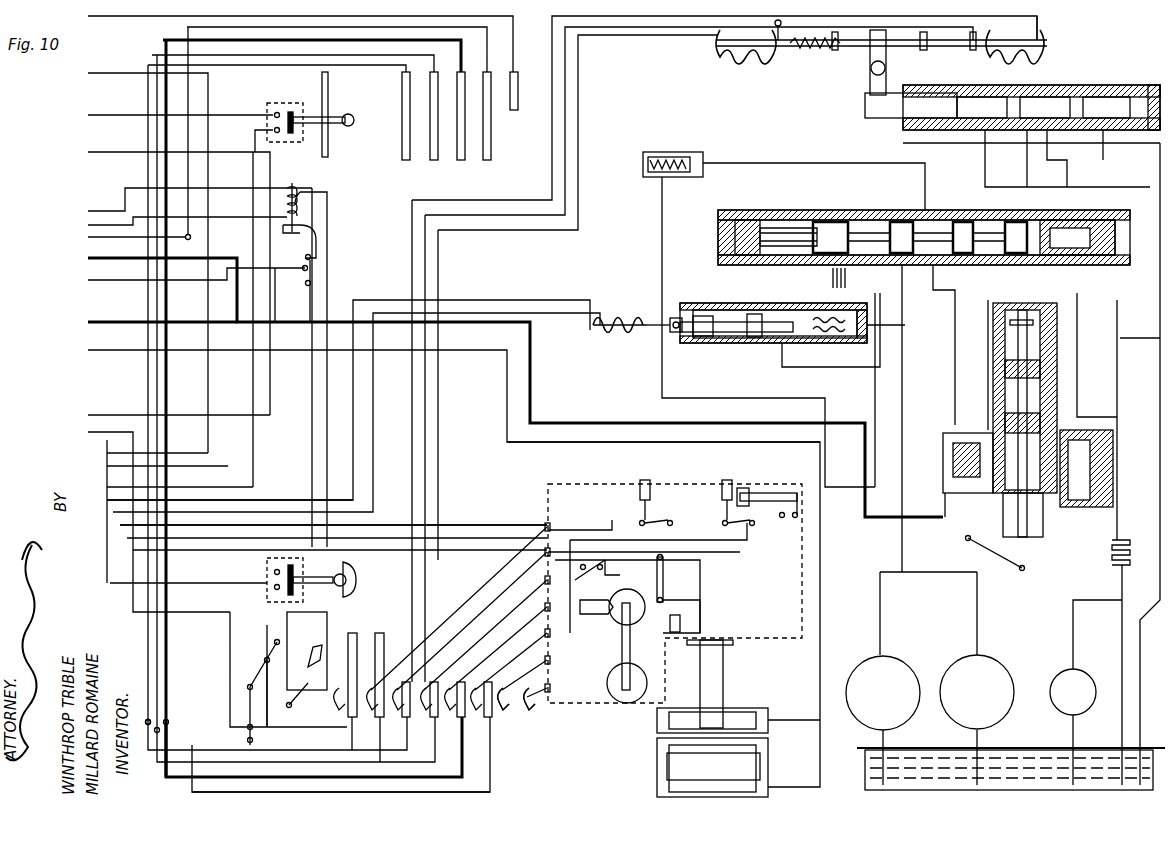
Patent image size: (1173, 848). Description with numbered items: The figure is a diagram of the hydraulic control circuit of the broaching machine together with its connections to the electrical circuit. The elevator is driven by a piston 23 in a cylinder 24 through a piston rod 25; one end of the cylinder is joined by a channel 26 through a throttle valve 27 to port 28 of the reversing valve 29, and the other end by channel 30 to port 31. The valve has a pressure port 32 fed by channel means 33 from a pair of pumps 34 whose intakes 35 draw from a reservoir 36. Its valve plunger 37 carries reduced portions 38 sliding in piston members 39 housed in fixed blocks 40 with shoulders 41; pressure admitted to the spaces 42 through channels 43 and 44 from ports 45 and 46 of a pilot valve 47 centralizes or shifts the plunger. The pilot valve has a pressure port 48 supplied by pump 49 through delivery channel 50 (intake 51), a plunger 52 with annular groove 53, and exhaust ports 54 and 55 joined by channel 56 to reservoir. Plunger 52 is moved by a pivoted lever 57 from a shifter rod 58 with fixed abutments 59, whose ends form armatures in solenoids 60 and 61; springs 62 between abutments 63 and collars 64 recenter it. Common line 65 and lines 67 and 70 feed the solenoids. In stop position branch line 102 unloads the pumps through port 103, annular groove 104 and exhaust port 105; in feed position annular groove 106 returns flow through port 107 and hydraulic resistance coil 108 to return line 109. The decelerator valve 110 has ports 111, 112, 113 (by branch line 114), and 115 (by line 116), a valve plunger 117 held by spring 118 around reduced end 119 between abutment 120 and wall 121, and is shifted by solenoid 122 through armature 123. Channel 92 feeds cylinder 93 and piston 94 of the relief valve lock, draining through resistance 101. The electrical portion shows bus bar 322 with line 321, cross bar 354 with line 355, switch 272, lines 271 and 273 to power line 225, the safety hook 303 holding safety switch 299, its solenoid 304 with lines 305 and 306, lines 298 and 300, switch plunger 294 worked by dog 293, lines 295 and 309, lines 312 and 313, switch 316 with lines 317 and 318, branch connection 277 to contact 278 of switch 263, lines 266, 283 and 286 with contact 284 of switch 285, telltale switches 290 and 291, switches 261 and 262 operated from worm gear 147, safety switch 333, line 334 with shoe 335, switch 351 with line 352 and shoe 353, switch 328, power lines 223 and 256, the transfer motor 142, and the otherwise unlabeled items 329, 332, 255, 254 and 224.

The line 321 is at (146, 16).
The bus bar 322 is at (522, 112).
The line 355 is at (104, 73).
The relay 329 is at (256, 114).
The switch 272 is at (302, 132).
The switch 328 is at (347, 114).
The cross bar 354 is at (322, 90).
The line 271 is at (104, 152).
The line 306 is at (200, 199).
The line 305 is at (90, 225).
The branch connection 277 is at (88, 237).
The solenoid 304 is at (300, 200).
The line 273 is at (328, 218).
The safety hook 303 is at (318, 243).
The safety switch 299 is at (312, 282).
The conductor 332 is at (253, 240).
The power line 225 is at (105, 258).
The line 283 is at (105, 280).
The line 266 is at (105, 303).
The power line 223 is at (138, 352).
The line 300 is at (135, 418).
The line 318 is at (100, 432).
The line 295 is at (107, 451).
The line 309 is at (107, 487).
The line 298 is at (312, 437).
The branch power line 317 is at (325, 450).
The line 312 is at (230, 492).
The line 70 is at (412, 442).
The common electrical line 65 is at (662, 30).
The line 67 is at (578, 137).
The line 313 is at (425, 450).
The switch 351 is at (528, 445).
The line 352 is at (547, 522).
The shoe 353 is at (498, 600).
The conductor 255 is at (500, 562).
The conductor 254 is at (498, 579).
The power line 256 is at (145, 722).
The line 334 is at (538, 706).
The shoe 335 is at (514, 707).
The dog 293 is at (355, 572).
The switch plunger 294 is at (348, 598).
The contact 284 is at (313, 647).
The switch 316 is at (298, 700).
The line 286 is at (248, 688).
The switch 285 is at (252, 686).
The telltale switch 290 is at (642, 482).
The telltale switch 291 is at (725, 482).
The safety switch 333 is at (766, 490).
The switch 261 is at (605, 572).
The switch 262 is at (664, 592).
The contact 278 is at (696, 615).
The switch 263 is at (682, 627).
The worm gear 147 is at (612, 620).
The transfer motor 142 is at (627, 703).
The piston rod 25 is at (725, 678).
The cylinder 24 is at (657, 748).
The piston 23 is at (667, 772).
The channel 26 is at (815, 760).
The throttle valve 27 is at (685, 152).
The space 42 is at (735, 251).
The piston member 39 is at (770, 225).
The reduced portion 38 is at (790, 225).
The valve plunger 37 is at (825, 225).
The annular groove 106 is at (858, 220).
The reversing valve 29 is at (810, 210).
The channel 43 is at (883, 200).
The port 28 is at (914, 178).
The exhaust port 105 is at (985, 225).
The annular groove 104 is at (1005, 225).
The port 103 is at (1000, 225).
The shoulder 41 is at (815, 264).
The fixed block 40 is at (828, 264).
The port 107 is at (879, 264).
The hydraulic resistance coil 108 is at (838, 286).
The port 31 is at (875, 284).
The pressure port 32 is at (908, 295).
The channel means 33 is at (902, 552).
The channel 30 is at (875, 397).
The decelerator valve 110 is at (705, 345).
The port 111 is at (691, 377).
The port 112 is at (777, 345).
The port 115 is at (774, 380).
The spring 118 is at (835, 345).
The reduced end 119 is at (822, 345).
The abutment 120 is at (900, 325).
The wall 121 is at (805, 345).
The port 113 is at (680, 318).
The branch line 114 is at (687, 270).
The valve plunger 117 is at (662, 285).
The armature 123 is at (647, 300).
The solenoid 122 is at (600, 340).
The line 116 is at (912, 372).
The branch line 102 is at (988, 300).
The return line 109 is at (1122, 335).
The channel 92 is at (1120, 385).
The resistance 101 is at (1112, 550).
The delivery channel 50 is at (1096, 598).
The channel 44 is at (1158, 178).
The channel 56 is at (1120, 170).
The pressure port 48 is at (1047, 160).
The port 46 is at (1070, 165).
The port 45 is at (1018, 135).
The exhaust port 54 is at (973, 124).
The valve plunger 52 is at (925, 92).
The annular groove 53 is at (1042, 95).
The exhaust port 55 is at (1102, 95).
The pilot valve 47 is at (1150, 85).
The pivoted lever 57 is at (870, 75).
The fixed abutment 59 is at (834, 50).
The shifter rod 58 is at (834, 48).
The solenoid 60 is at (735, 58).
The fixed abutment 63 is at (780, 48).
The spring 62 is at (790, 50).
The collar 64 is at (828, 47).
The solenoid 61 is at (1042, 36).
The cylinder 93 is at (1000, 490).
The piston 94 is at (956, 451).
The lever 224 is at (968, 545).
The pump 34 is at (872, 662).
The pump 49 is at (1062, 678).
The intake 35 is at (888, 755).
The intake 51 is at (1075, 733).
The reservoir 36 is at (1018, 748).